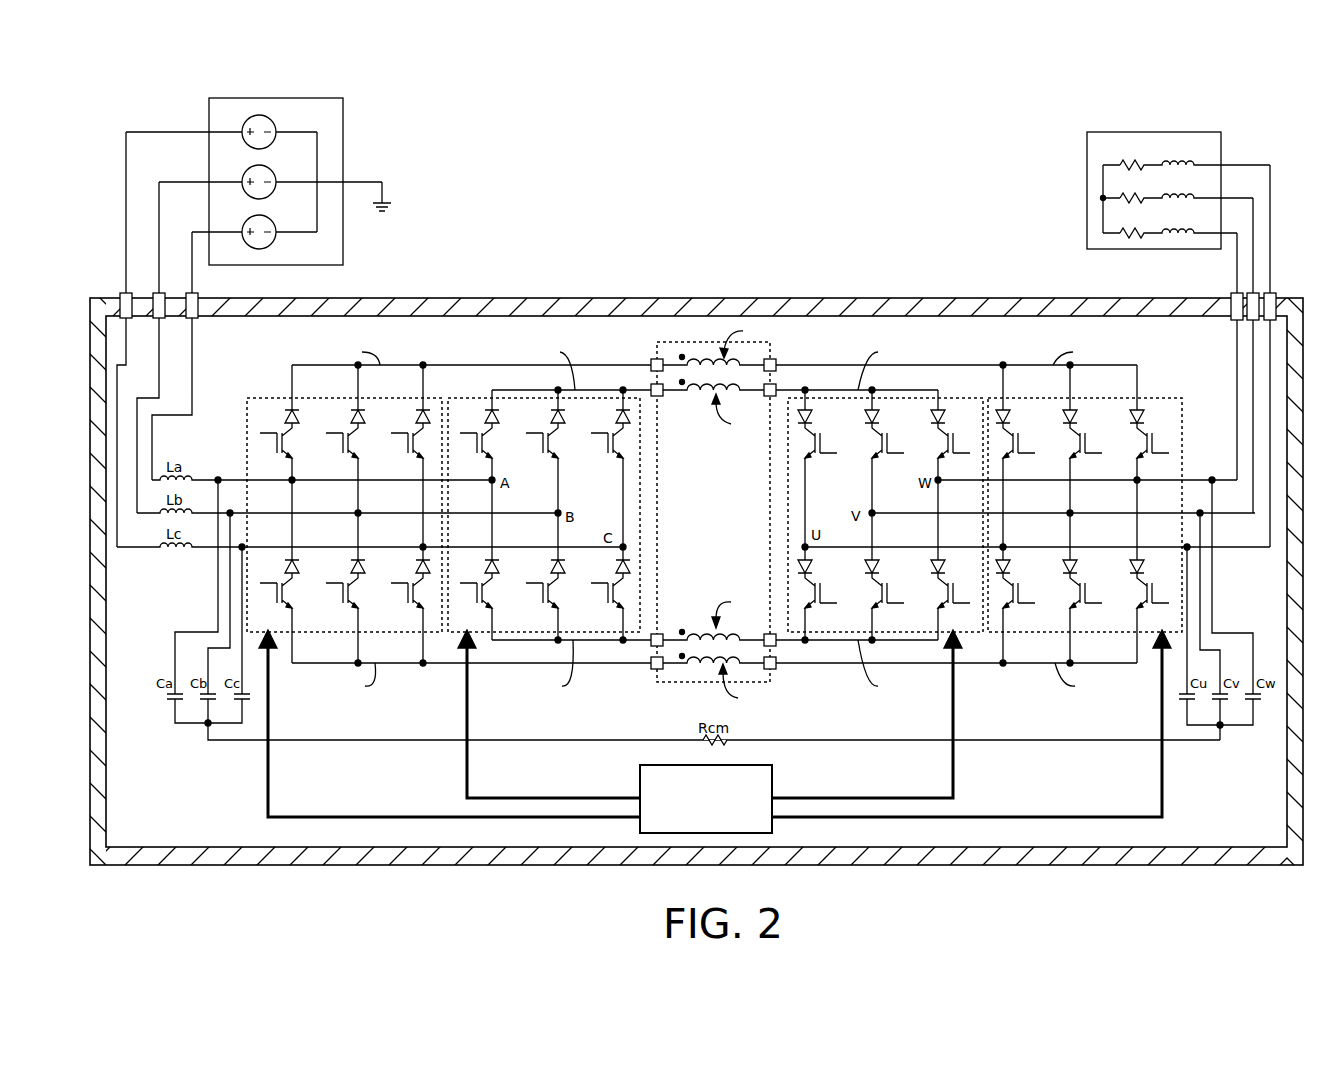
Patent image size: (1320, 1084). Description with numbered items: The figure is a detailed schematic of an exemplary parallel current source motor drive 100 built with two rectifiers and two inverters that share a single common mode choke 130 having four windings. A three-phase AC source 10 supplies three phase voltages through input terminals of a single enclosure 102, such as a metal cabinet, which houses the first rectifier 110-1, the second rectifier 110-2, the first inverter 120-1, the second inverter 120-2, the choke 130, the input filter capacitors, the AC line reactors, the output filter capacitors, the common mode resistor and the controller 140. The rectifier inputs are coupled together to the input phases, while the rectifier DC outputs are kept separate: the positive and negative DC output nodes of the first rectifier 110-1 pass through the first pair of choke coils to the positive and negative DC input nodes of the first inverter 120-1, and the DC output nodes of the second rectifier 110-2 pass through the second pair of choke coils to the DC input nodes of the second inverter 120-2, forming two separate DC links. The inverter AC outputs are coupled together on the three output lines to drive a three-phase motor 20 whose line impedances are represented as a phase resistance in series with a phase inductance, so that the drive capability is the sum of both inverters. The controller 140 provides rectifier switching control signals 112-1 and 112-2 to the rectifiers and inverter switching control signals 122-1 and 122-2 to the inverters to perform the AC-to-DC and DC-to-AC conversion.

The AC source 10 is at (220, 98).
The three-phase motor 20 is at (1098, 132).
The motor drive 100 is at (586, 279).
The enclosure 102 is at (708, 299).
The first rectifier 110-1 is at (247, 398).
The second rectifier 110-2 is at (448, 398).
The rectifier switching control signals 112-1 is at (266, 790).
The rectifier switching control signals 112-2 is at (466, 780).
The first inverter 120-1 is at (1182, 398).
The second inverter 120-2 is at (963, 398).
The inverter switching control signals 122-1 is at (1160, 795).
The inverter switching control signals 122-2 is at (952, 778).
The common mode choke 130 is at (664, 342).
The controller 140 is at (655, 765).